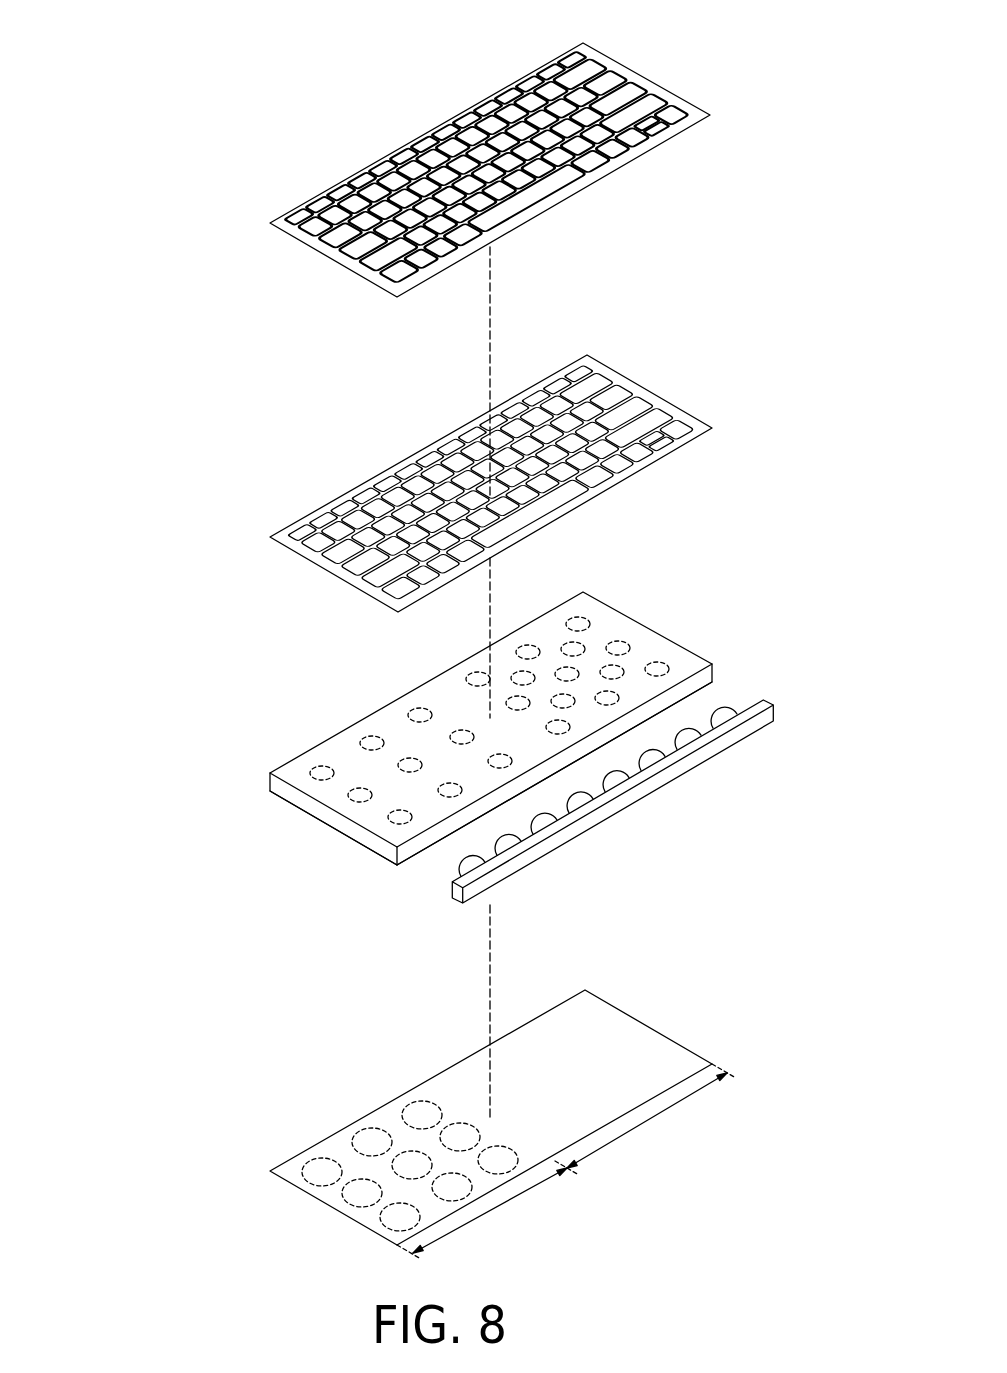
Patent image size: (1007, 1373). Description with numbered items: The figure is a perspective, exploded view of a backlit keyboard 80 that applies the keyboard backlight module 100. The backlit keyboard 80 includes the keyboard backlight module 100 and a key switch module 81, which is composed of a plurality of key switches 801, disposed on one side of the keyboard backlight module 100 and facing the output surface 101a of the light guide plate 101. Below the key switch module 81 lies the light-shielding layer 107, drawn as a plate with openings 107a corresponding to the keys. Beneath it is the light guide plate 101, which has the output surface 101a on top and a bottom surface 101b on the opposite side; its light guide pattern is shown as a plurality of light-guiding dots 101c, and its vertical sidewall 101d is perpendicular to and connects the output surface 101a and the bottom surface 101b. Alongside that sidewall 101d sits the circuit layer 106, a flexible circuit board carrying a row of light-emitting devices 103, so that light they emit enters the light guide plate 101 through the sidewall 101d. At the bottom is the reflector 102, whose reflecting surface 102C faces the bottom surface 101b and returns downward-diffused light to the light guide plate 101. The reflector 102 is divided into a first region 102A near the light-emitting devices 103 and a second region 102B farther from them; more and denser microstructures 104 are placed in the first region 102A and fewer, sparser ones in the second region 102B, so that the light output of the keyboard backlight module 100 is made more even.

The backlit keyboard 80 is at (55, 24).
The key switch module 81 is at (473, 170).
The key switches 801 is at (617, 74).
The light-shielding layer 107 is at (429, 496).
The openings of key frame layer 107a is at (633, 407).
The keyboard backlight module 100 is at (123, 732).
The light guide plate 101 is at (476, 735).
The output surface 101a is at (657, 642).
The bottom surface 101b is at (687, 700).
The light-guiding dots 101c is at (397, 822).
The sidewall 101d is at (290, 792).
The light-emitting device 103 is at (470, 863).
The circuit layer 106 is at (592, 811).
The reflector 102 is at (432, 1114).
The first region 102A is at (488, 1210).
The second region 102B is at (651, 1116).
The reflecting surface 102C is at (617, 1048).
The microstructure 104 is at (522, 1158).